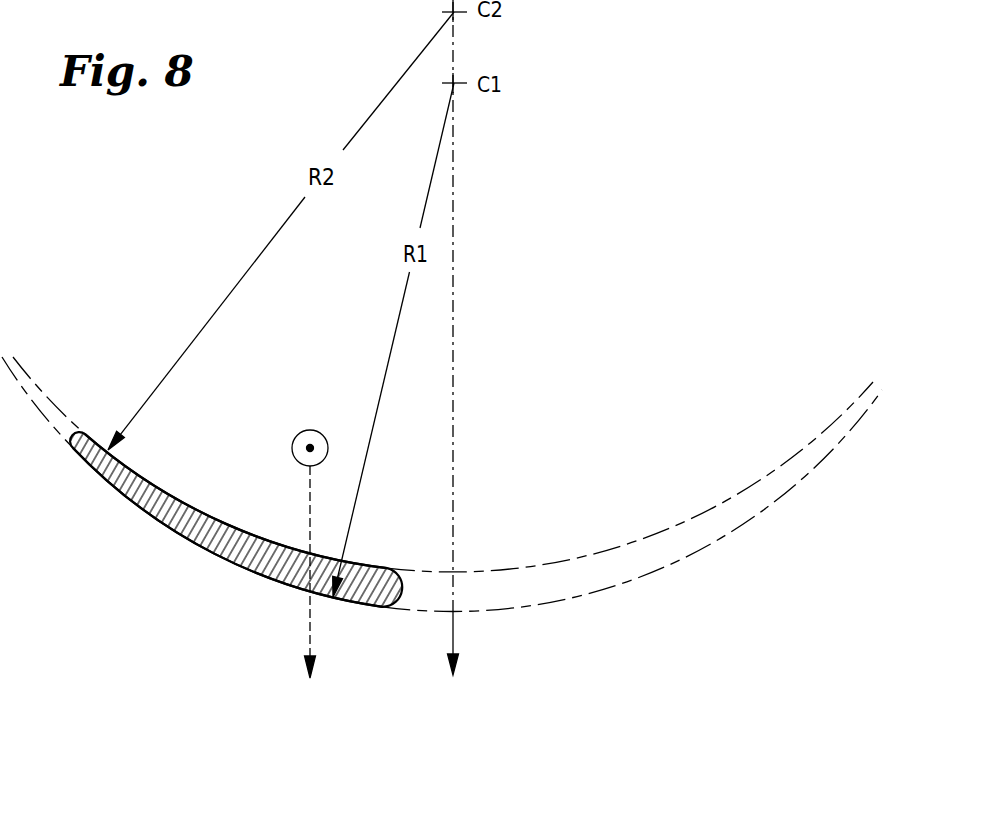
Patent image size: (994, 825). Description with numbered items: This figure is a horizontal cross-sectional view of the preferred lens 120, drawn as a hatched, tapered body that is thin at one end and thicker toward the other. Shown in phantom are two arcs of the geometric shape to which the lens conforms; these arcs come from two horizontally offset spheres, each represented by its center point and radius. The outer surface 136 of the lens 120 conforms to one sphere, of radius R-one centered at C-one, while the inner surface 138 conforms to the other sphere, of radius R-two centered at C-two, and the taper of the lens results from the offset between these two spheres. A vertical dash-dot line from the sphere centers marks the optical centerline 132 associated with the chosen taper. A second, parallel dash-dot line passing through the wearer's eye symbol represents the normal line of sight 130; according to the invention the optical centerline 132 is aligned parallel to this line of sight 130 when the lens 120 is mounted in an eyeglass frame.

The lens 120 is at (213, 538).
The normal line of sight 130 is at (310, 629).
The optical centerline 132 is at (453, 630).
The outer surface 136 is at (142, 508).
The inner surface 138 is at (157, 487).